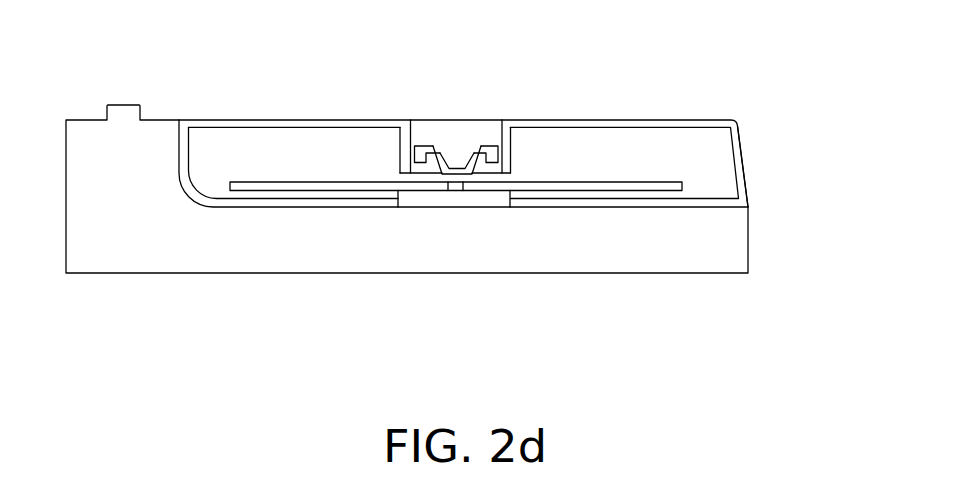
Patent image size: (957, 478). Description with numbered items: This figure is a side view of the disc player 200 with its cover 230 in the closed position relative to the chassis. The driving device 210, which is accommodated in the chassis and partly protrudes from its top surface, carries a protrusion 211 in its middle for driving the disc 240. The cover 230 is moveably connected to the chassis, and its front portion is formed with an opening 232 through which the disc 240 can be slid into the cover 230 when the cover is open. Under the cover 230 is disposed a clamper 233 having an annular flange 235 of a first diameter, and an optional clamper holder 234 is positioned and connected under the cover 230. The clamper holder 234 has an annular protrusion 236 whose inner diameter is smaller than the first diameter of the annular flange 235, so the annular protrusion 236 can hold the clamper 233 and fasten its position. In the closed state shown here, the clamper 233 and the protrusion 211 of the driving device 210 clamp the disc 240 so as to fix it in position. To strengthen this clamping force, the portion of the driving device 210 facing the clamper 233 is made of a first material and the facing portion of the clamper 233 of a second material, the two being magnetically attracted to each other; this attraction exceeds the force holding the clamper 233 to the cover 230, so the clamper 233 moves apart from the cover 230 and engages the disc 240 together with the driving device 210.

The disc player 200 is at (808, 123).
The driving device 210 is at (513, 203).
The protrusion 211 is at (452, 186).
The cover 230 is at (610, 120).
The opening 232 is at (179, 140).
The clamper 233 is at (465, 148).
The clamper holder 234 is at (401, 145).
The annular flange 235 is at (419, 145).
The annular protrusion 236 is at (403, 173).
The disc 240 is at (644, 181).